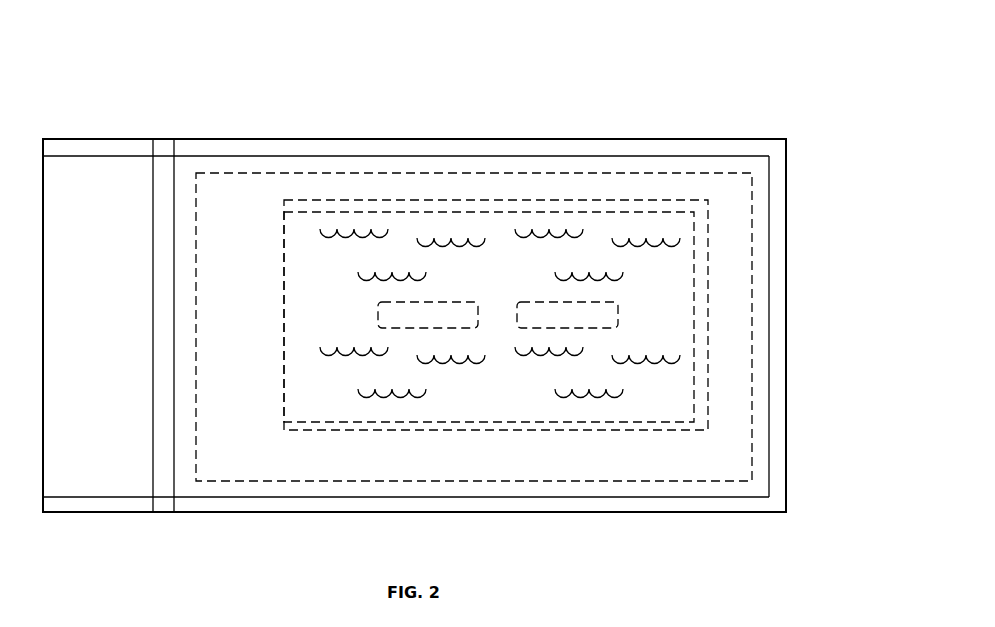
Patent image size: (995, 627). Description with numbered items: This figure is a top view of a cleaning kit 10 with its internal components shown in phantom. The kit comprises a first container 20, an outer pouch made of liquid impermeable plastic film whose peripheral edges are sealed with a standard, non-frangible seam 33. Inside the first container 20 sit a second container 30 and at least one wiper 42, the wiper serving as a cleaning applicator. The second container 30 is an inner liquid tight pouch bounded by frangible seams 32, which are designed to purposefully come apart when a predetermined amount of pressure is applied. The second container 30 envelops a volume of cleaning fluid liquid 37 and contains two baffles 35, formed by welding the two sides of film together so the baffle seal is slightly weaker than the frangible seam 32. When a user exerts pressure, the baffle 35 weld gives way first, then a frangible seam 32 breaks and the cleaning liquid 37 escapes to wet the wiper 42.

The cleaning kit 10 is at (401, 54).
The first container 20 is at (111, 330).
The second container 30 is at (657, 298).
The frangible seam 32 is at (632, 205).
The standard seam 33 is at (562, 506).
The baffle 35 is at (380, 312).
The cleaning fluid liquid 37 is at (652, 363).
The wiper 42 is at (327, 482).